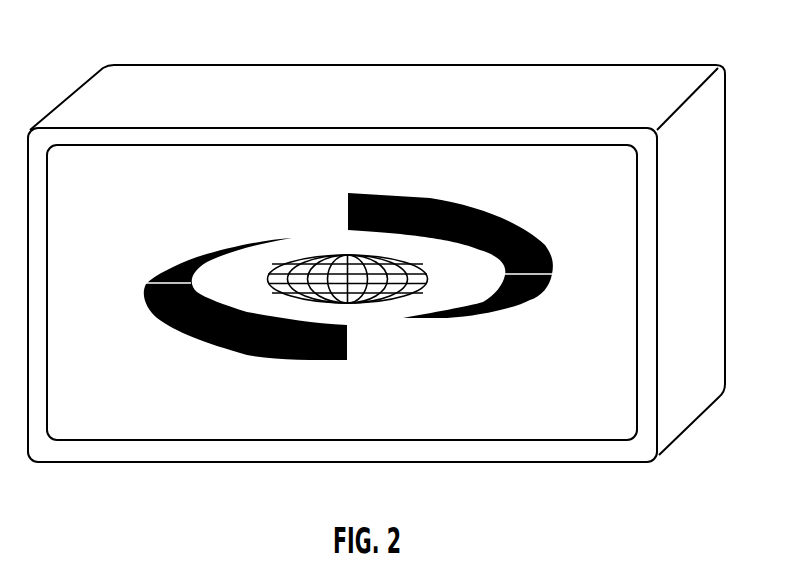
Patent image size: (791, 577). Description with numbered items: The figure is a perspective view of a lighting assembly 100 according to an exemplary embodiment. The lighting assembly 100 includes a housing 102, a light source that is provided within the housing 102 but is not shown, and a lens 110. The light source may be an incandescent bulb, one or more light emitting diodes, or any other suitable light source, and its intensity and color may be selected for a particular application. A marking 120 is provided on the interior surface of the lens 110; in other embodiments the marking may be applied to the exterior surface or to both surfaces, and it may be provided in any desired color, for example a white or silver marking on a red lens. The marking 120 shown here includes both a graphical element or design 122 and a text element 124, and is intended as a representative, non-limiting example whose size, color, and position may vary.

The lighting assembly 100 is at (601, 52).
The housing 102 is at (370, 88).
The lens 110 is at (465, 170).
The marking 120 is at (542, 222).
The graphical element 122 is at (239, 352).
The text element 124 is at (123, 208).